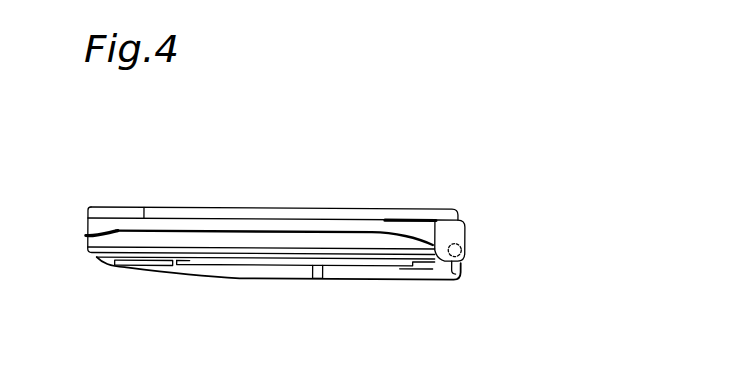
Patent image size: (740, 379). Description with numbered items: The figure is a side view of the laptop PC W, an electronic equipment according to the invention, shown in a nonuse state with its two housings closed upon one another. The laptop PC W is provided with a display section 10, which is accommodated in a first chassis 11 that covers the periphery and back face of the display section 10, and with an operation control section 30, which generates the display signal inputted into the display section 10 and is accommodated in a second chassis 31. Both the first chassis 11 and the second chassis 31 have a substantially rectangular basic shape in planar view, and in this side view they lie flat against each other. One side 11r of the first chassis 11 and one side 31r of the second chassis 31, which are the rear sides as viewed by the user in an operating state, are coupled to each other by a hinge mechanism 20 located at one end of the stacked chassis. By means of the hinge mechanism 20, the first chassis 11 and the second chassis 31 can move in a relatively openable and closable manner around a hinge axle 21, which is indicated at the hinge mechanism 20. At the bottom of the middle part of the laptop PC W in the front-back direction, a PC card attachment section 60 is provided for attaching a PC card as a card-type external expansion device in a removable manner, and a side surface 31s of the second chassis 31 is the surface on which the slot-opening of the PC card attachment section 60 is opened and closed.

The display section 10 is at (325, 201).
The chassis 11 is at (233, 208).
The first side 11r is at (460, 216).
The hinge mechanism 20 is at (476, 230).
The hinge axle 21 is at (464, 248).
The operation control section 30 is at (311, 292).
The chassis 31 is at (228, 258).
The side surface 31s is at (385, 258).
The first side 31r is at (467, 262).
The PC card attachment section 60 is at (280, 274).
The laptop PC W is at (206, 183).